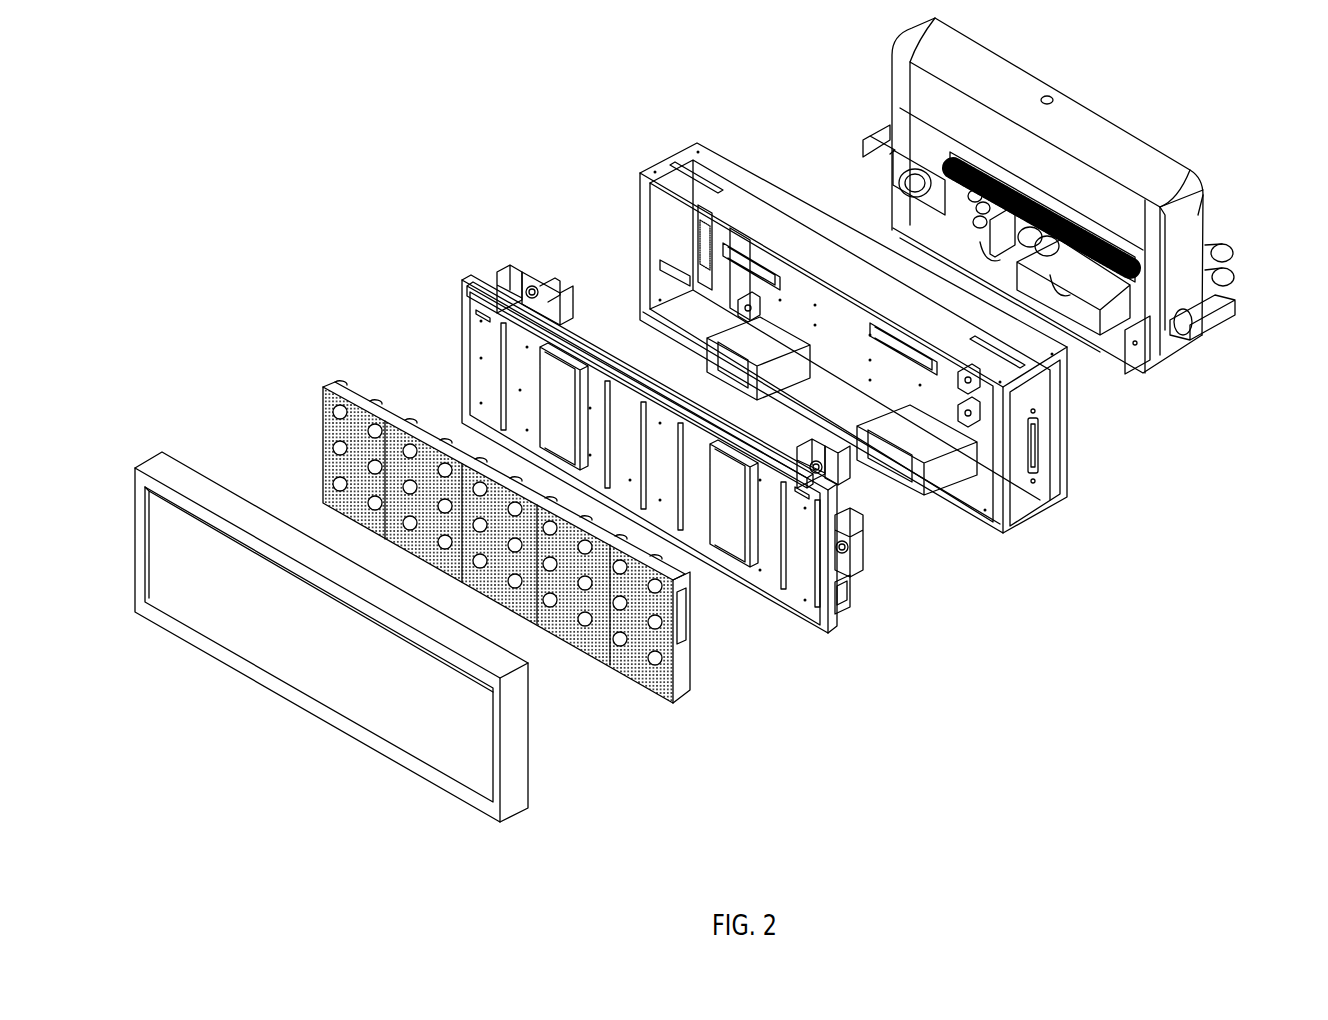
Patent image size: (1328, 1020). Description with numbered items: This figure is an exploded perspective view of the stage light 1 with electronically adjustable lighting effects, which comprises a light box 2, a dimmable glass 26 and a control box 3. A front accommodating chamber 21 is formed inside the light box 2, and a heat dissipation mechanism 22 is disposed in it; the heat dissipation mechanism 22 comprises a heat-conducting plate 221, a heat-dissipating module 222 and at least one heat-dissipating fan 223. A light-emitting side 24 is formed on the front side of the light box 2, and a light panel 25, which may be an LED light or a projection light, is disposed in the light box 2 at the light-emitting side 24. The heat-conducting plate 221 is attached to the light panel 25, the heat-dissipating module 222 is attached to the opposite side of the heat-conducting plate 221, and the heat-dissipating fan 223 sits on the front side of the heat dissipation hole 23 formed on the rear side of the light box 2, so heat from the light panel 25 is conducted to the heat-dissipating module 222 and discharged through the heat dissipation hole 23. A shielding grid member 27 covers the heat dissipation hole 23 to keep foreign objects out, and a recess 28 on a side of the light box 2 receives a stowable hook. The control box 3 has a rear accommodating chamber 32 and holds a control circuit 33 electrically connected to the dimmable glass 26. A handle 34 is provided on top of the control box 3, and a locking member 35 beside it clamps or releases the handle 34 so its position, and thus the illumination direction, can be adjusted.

The stage light 1 is at (246, 210).
The light box 2 is at (1055, 442).
The control box 3 is at (950, 118).
The front accommodating chamber 21 is at (1005, 485).
The heat dissipation mechanism 22 is at (485, 277).
The heat dissipation hole 23 is at (708, 240).
The light-emitting side 24 is at (152, 477).
The light panel 25 is at (692, 605).
The dimmable glass 26 is at (245, 637).
The shielding grid member 27 is at (693, 255).
The recess 28 is at (1033, 452).
The rear accommodating chamber 32 is at (1130, 332).
The control circuit 33 is at (1190, 247).
The handle 34 is at (1175, 182).
The locking member 35 is at (1207, 315).
The heat-conducting plate 221 is at (807, 580).
The heat-dissipating module 222 is at (850, 553).
The heat-dissipating fan 223 is at (555, 283).